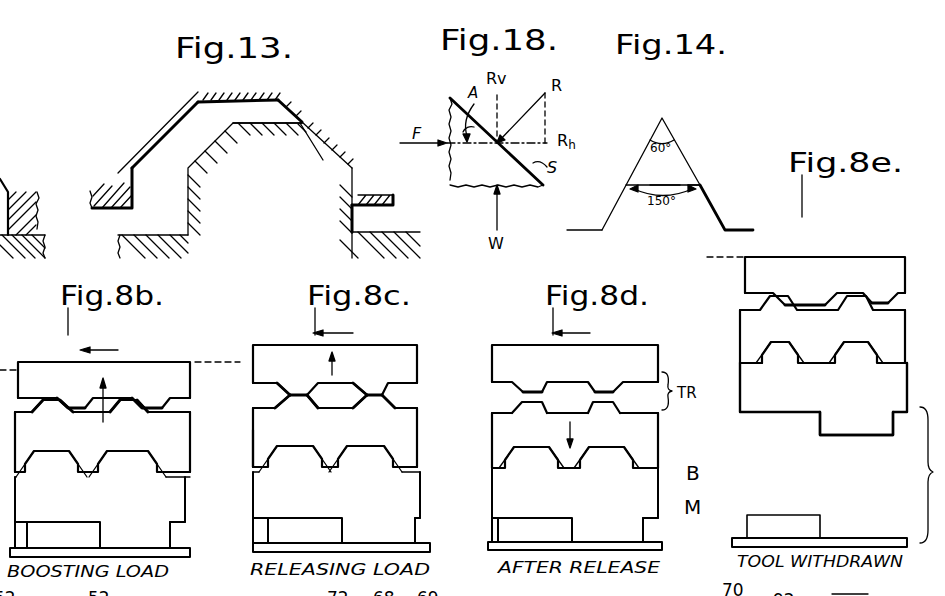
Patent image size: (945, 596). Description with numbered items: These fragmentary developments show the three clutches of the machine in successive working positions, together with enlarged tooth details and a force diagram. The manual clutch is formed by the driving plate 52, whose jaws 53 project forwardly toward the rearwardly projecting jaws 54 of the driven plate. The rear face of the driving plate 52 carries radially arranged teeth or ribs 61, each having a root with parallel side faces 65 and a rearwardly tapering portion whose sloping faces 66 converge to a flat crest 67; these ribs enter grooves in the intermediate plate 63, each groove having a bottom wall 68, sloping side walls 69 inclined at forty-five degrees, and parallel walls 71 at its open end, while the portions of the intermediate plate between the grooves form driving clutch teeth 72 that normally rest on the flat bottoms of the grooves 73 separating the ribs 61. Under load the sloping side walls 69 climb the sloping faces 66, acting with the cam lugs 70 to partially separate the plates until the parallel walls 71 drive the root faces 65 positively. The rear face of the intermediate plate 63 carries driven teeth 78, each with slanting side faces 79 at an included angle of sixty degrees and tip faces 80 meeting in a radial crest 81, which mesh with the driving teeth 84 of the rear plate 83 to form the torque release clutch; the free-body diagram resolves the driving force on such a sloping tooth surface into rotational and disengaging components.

In FIG. 8B, the driving plate 52 is at (181, 509).
In FIG. 8C, the driving plate 52 is at (410, 507).
In FIG. 8D, the driving plate 52 is at (648, 507).
In FIG. 8E, the driving plate 52 is at (836, 400).
In FIG. 8B, the jaws 53 is at (162, 535).
In FIG. 8C, the jaws 53 is at (397, 532).
In FIG. 8D, the jaws 53 is at (630, 533).
In FIG. 8E, the jaws 53 is at (860, 430).
In FIG. 8B, the jaws 54 is at (40, 532).
In FIG. 8C, the jaws 54 is at (282, 531).
In FIG. 8D, the jaws 54 is at (498, 530).
In FIG. 8E, the jaws 54 is at (800, 525).
In FIG. 8B, the teeth or ribs 61 is at (65, 467).
In FIG. 8C, the teeth or ribs 61 is at (303, 467).
In FIG. 8D, the teeth or ribs 61 is at (535, 462).
In FIG. 8E, the teeth or ribs 61 is at (767, 342).
In FIG. 14, the intermediate plate 63 is at (590, 208).
In FIG. 8B, the intermediate plate 63 is at (52, 448).
In FIG. 8C, the intermediate plate 63 is at (400, 437).
In FIG. 8D, the intermediate plate 63 is at (643, 445).
In FIG. 8E, the intermediate plate 63 is at (877, 336).
In FIG. 13, the side faces 65 is at (178, 215).
In FIG. 8B, the side faces 65 is at (118, 448).
In FIG. 13, the sloping faces 66 is at (209, 152).
In FIG. 13, the flat crest 67 is at (262, 127).
In FIG. 8B, the flat crest 67 is at (76, 406).
In FIG. 13, the bottom wall 68 is at (196, 103).
In FIG. 8C, the bottom wall 68 is at (297, 443).
In FIG. 13, the sloping side walls 69 is at (169, 135).
In FIG. 8C, the sloping side walls 69 is at (257, 449).
In FIG. 8D, the cam lugs 70 is at (597, 402).
In FIG. 13, the parallel walls 71 is at (133, 205).
In FIG. 13, the driving clutch teeth 72 is at (378, 149).
In FIG. 8E, the driving clutch teeth 72 is at (815, 358).
In FIG. 13, the grooves 73 is at (373, 222).
In FIG. 8C, the grooves 73 is at (350, 456).
In FIG. 14, the driven teeth 78 is at (674, 228).
In FIG. 8B, the driven teeth 78 is at (45, 400).
In FIG. 14, the slanting side faces 79 is at (713, 193).
In FIG. 8C, the slanting side faces 79 is at (266, 389).
In FIG. 14, the tip faces 80 is at (683, 182).
In FIG. 14, the crest 81 is at (663, 177).
In FIG. 8B, the rear plate 83 is at (186, 376).
In FIG. 8C, the rear plate 83 is at (335, 370).
In FIG. 8D, the rear plate 83 is at (508, 355).
In FIG. 8E, the rear plate 83 is at (876, 279).
In FIG. 8B, the driving teeth 84 is at (74, 405).
In FIG. 8C, the driving teeth 84 is at (367, 384).
In FIG. 8E, the driving teeth 84 is at (808, 300).